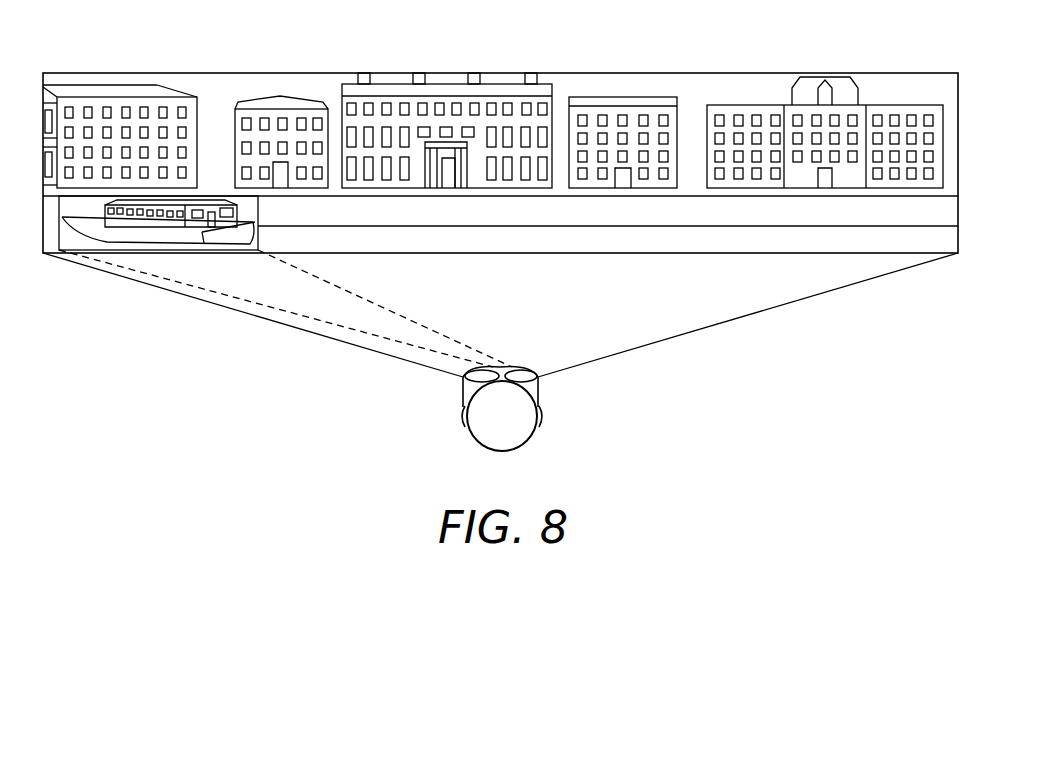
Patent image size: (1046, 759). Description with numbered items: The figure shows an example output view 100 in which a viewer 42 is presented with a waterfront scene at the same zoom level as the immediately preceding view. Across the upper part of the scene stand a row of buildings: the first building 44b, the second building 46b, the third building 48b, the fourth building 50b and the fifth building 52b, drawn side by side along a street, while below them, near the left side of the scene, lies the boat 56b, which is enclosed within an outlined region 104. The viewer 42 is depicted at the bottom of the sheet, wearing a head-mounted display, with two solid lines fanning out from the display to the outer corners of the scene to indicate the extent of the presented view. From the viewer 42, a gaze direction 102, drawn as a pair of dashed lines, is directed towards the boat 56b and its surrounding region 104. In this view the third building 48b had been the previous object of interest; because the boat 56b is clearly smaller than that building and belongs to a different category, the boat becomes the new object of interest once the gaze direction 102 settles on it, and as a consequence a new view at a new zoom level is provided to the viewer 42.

The view 100 is at (859, 332).
The first building 44b is at (123, 90).
The second building 46b is at (277, 90).
The third building 48b is at (445, 90).
The fourth building 50b is at (623, 100).
The fifth building 52b is at (820, 88).
The boat 56b is at (112, 233).
The region of interest 104 is at (228, 257).
The gaze direction 102 is at (400, 315).
The viewer 42 is at (472, 440).